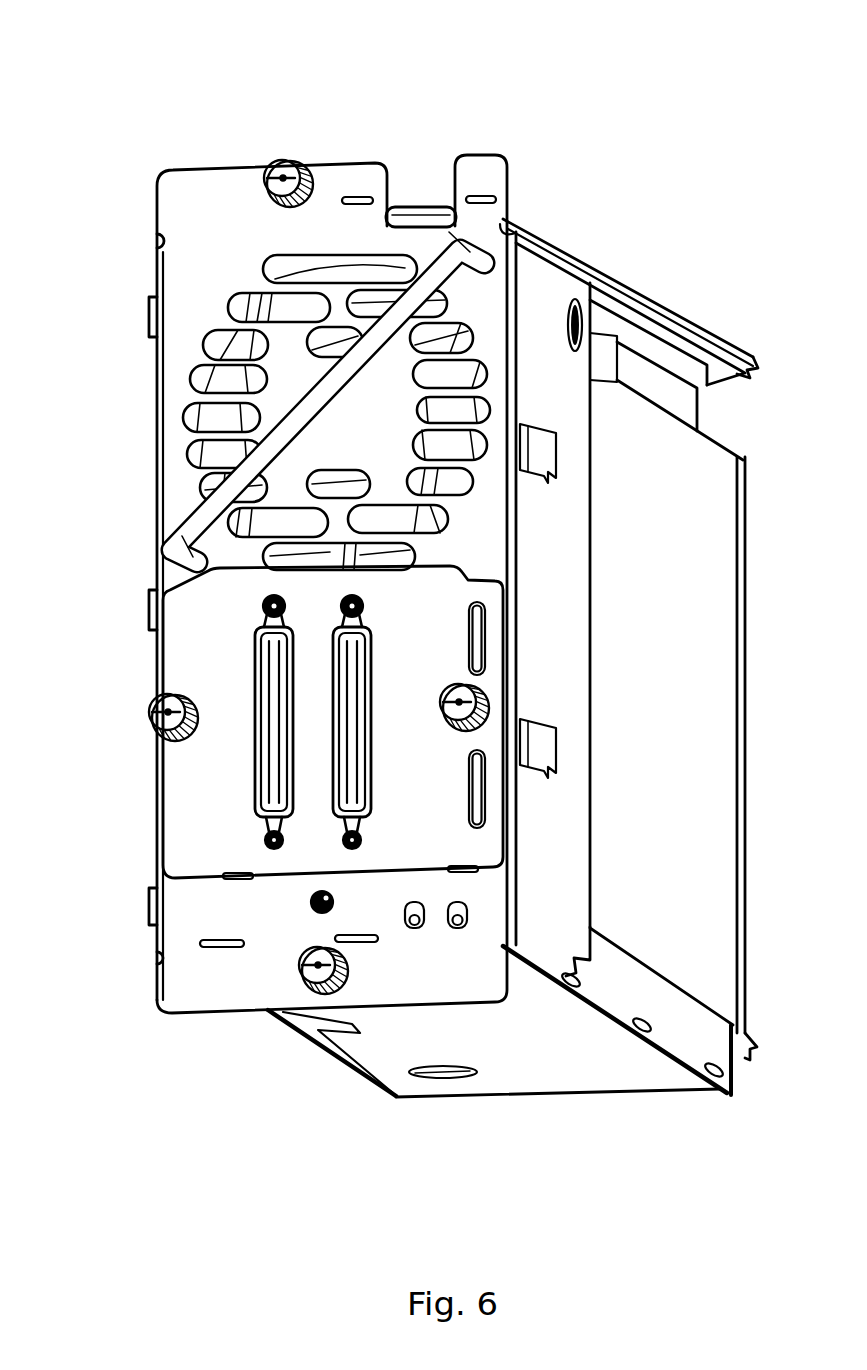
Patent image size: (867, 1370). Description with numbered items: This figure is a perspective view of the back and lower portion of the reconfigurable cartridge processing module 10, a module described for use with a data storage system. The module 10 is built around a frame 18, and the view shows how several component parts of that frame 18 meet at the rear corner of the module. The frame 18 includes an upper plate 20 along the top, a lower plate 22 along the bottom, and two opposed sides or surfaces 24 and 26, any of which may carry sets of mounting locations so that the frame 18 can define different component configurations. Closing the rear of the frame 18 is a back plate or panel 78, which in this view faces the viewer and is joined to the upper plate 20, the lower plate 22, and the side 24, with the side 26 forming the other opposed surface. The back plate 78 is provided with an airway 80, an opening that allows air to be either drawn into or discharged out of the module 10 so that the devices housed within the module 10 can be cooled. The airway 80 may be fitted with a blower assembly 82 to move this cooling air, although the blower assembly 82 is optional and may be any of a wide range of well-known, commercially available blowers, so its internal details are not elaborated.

The reconfigurable cartridge processing module 10 is at (147, 58).
The frame 18 is at (156, 168).
The upper plate 20 is at (647, 284).
The lower plate 22 is at (543, 1053).
The side 24 is at (568, 564).
The side 26 is at (160, 660).
The back plate 78 is at (223, 241).
The airway 80 is at (187, 450).
The blower assembly 82 is at (190, 382).